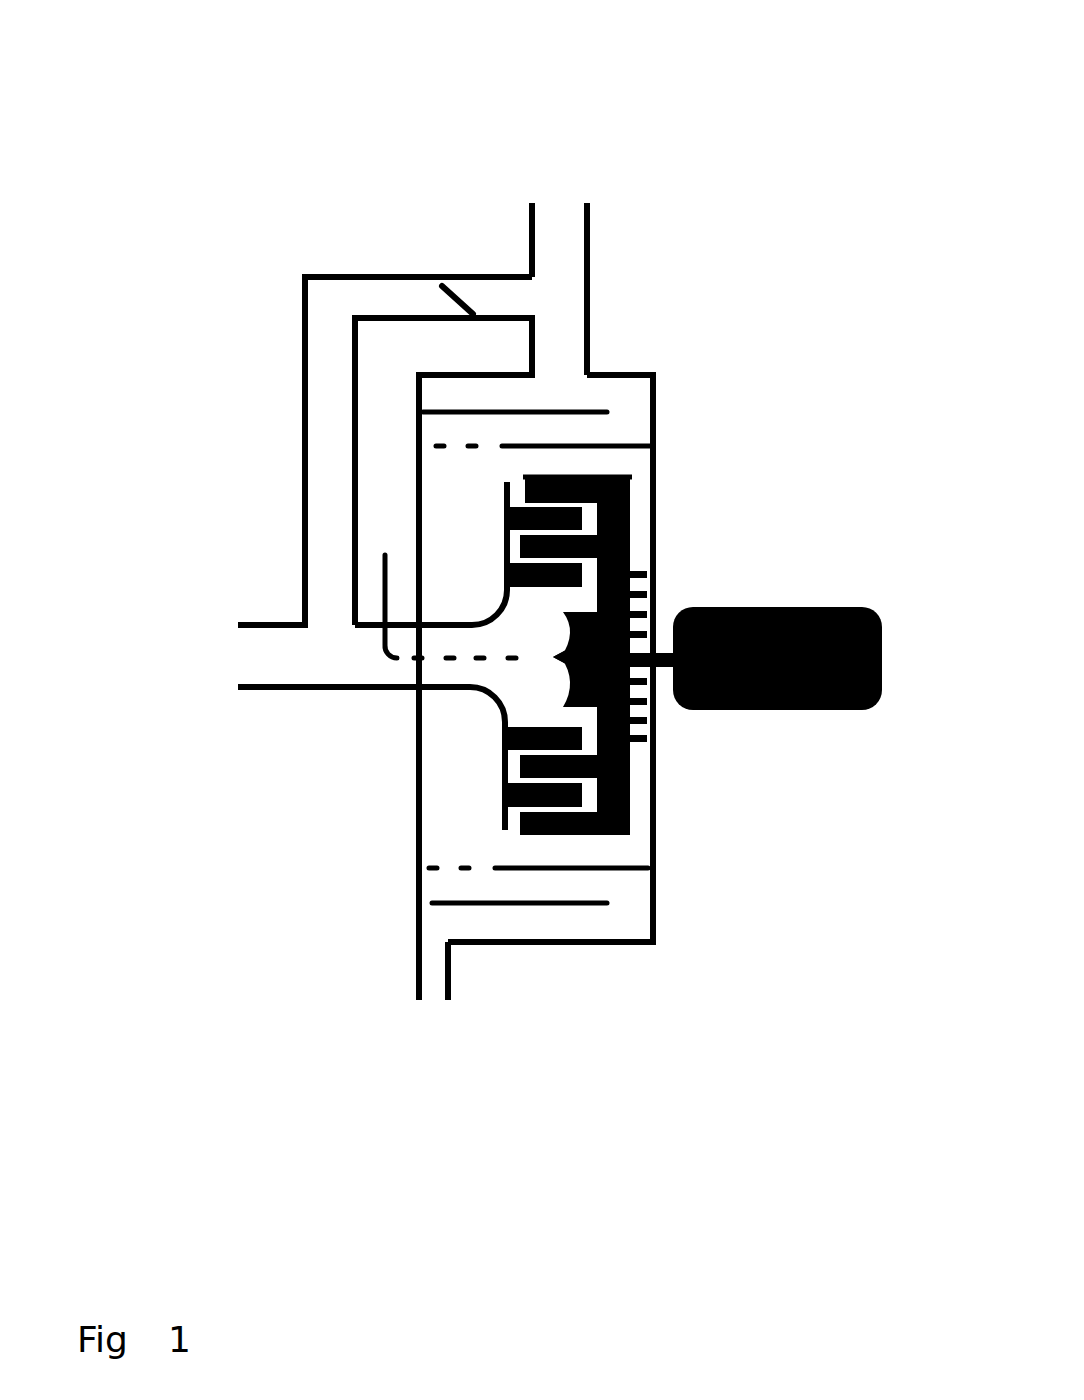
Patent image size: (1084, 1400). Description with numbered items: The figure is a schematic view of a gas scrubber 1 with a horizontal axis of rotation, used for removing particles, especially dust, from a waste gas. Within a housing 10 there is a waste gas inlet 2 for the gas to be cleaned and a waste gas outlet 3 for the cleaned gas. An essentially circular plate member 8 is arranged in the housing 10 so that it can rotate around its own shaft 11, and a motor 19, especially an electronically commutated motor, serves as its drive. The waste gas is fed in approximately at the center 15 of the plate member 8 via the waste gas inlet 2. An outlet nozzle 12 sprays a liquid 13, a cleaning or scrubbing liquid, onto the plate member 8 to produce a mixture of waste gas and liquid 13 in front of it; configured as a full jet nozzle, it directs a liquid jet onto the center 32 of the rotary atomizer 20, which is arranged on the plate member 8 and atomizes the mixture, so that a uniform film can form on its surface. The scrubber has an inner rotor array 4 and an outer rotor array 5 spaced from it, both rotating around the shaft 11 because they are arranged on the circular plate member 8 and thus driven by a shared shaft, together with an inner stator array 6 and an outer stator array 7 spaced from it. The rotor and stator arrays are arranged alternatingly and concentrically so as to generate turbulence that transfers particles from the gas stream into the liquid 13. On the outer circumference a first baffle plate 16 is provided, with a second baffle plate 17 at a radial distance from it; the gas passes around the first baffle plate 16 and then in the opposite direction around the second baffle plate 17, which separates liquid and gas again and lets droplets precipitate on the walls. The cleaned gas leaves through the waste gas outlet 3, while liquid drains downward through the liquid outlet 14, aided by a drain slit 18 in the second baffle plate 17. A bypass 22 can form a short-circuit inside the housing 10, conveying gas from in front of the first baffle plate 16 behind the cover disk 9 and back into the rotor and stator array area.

The gas scrubber 1 is at (497, 627).
The waste gas inlet 2 is at (262, 658).
The waste gas outlet 3 is at (562, 187).
The inner rotor array 4 is at (518, 755).
The outer rotor array 5 is at (532, 835).
The inner stator array 6 is at (507, 572).
The outer stator array 7 is at (507, 518).
The circular plate member 8 is at (630, 805).
The cover disk 9 is at (505, 828).
The housing 10 is at (657, 420).
The shaft 11 is at (662, 648).
The outlet nozzle 12 is at (383, 655).
The liquid 13 is at (452, 662).
The liquid outlet 14 is at (425, 912).
The center 15 is at (553, 657).
The center 32 is at (559, 657).
The first baffle plate 16 is at (618, 440).
The second baffle plate 17 is at (597, 410).
The drain slit 18 is at (432, 1000).
The motor 19 is at (783, 717).
The rotary atomizer 20 is at (563, 643).
The bypass 22 is at (318, 295).